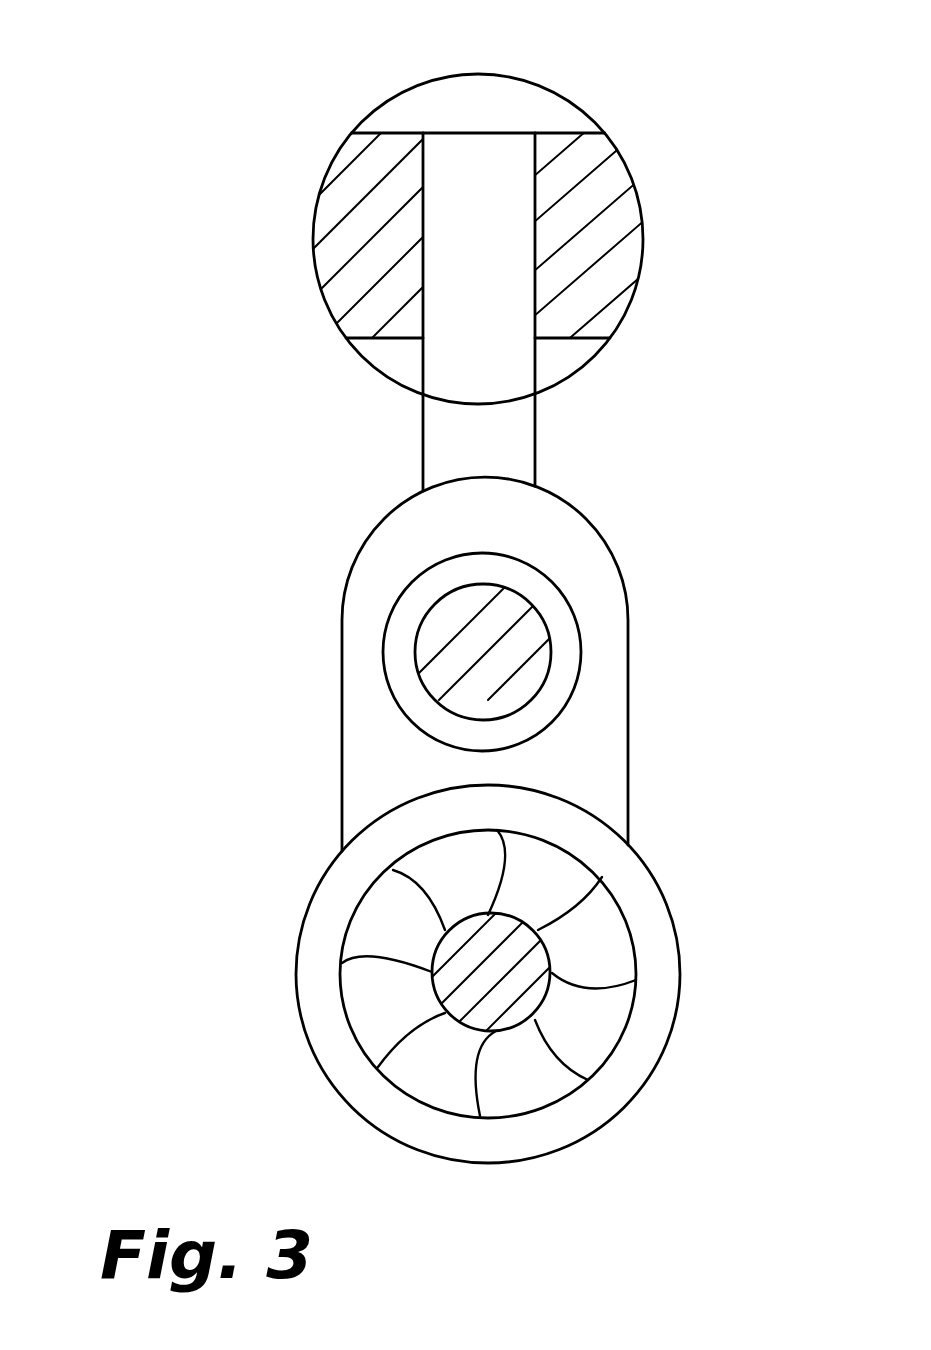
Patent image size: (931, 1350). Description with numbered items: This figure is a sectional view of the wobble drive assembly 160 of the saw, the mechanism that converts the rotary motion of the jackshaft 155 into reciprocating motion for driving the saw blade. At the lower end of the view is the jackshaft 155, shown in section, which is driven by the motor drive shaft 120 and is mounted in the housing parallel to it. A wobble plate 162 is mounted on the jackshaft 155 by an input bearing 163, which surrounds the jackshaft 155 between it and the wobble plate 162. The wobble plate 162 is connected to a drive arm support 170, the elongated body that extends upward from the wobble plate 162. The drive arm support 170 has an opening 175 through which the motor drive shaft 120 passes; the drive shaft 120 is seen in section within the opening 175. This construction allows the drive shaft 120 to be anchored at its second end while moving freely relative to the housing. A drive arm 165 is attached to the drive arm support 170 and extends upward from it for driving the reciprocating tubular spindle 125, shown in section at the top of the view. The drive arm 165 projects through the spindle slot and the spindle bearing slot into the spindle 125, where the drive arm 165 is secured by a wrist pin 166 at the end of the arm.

The wobble drive assembly 160 is at (248, 531).
The reciprocating tubular spindle 125 is at (635, 184).
The wrist pin 166 is at (463, 132).
The drive arm 165 is at (540, 440).
The drive arm support 170 is at (332, 723).
The opening 175 is at (560, 700).
The motor drive shaft 120 is at (537, 632).
The wobble plate 162 is at (617, 1112).
The input bearing 163 is at (607, 1032).
The jackshaft 155 is at (538, 968).